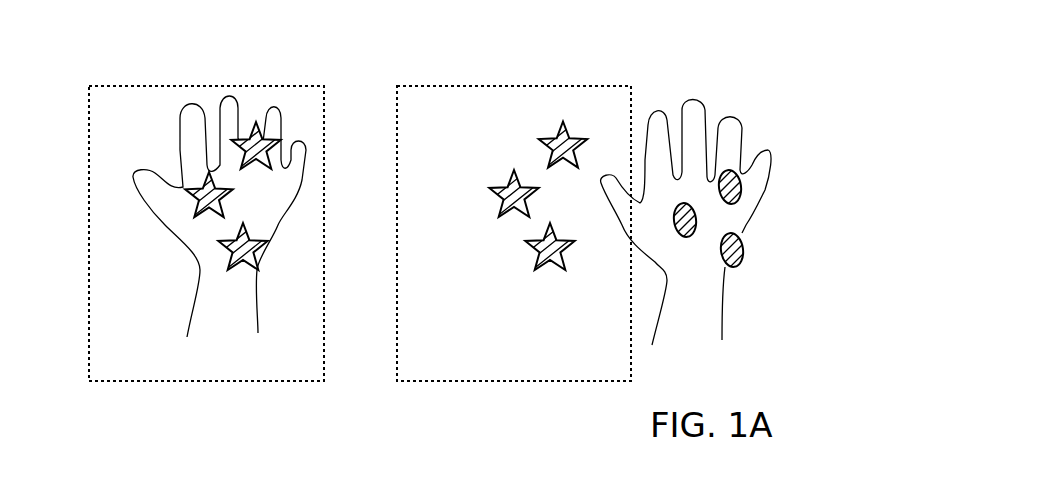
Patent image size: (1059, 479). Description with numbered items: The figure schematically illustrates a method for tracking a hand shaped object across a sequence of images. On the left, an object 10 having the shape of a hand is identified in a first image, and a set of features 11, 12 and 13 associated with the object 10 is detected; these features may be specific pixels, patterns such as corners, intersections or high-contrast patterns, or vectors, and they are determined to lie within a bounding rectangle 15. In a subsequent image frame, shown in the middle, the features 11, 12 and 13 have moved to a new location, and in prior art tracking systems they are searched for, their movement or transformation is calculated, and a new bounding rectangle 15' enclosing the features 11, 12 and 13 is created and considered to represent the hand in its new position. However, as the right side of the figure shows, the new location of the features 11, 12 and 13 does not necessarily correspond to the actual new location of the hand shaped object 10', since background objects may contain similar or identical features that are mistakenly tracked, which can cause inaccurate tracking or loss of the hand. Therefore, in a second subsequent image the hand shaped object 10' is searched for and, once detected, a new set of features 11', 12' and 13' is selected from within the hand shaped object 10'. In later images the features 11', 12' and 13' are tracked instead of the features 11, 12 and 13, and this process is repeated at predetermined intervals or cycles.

The hand shaped object 10 is at (219, 181).
The hand shaped object in new location 10' is at (703, 209).
The feature 11 is at (291, 193).
The new feature 11' is at (741, 224).
The feature 12 is at (412, 110).
The new feature 12' is at (764, 191).
The feature 13 is at (309, 246).
The new feature 13' is at (765, 254).
The bounding rectangle 15 is at (206, 208).
The new bounding rectangle 15' is at (514, 208).